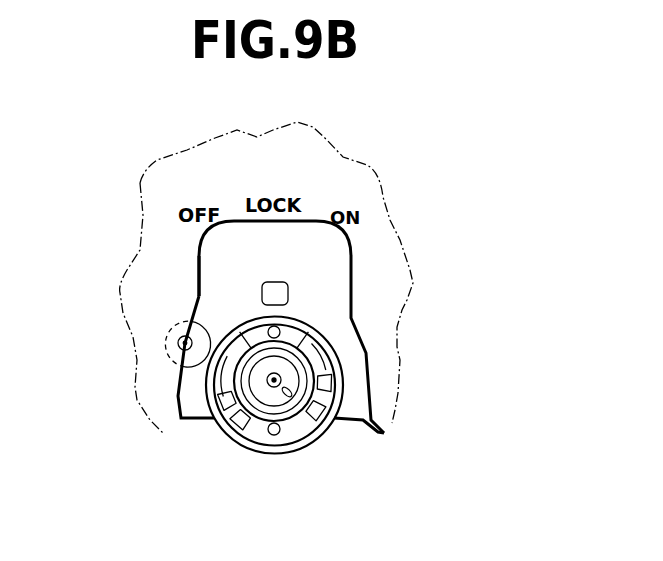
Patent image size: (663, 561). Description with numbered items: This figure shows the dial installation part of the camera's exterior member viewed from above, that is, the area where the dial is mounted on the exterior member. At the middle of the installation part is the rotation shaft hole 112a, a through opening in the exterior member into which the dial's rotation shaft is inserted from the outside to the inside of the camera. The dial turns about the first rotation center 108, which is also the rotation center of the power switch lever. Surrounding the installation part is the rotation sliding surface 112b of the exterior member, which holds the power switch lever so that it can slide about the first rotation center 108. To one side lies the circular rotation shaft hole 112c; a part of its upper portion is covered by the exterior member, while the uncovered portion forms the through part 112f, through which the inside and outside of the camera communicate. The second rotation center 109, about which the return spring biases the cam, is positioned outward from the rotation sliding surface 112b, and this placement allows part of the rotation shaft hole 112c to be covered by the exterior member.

The first rotation center 108 is at (276, 380).
The second rotation center 109 is at (170, 327).
The rotation shaft hole 112a is at (285, 397).
The rotation sliding surface 112b is at (248, 318).
The rotation shaft hole 112c is at (164, 372).
The through part 112f is at (199, 298).